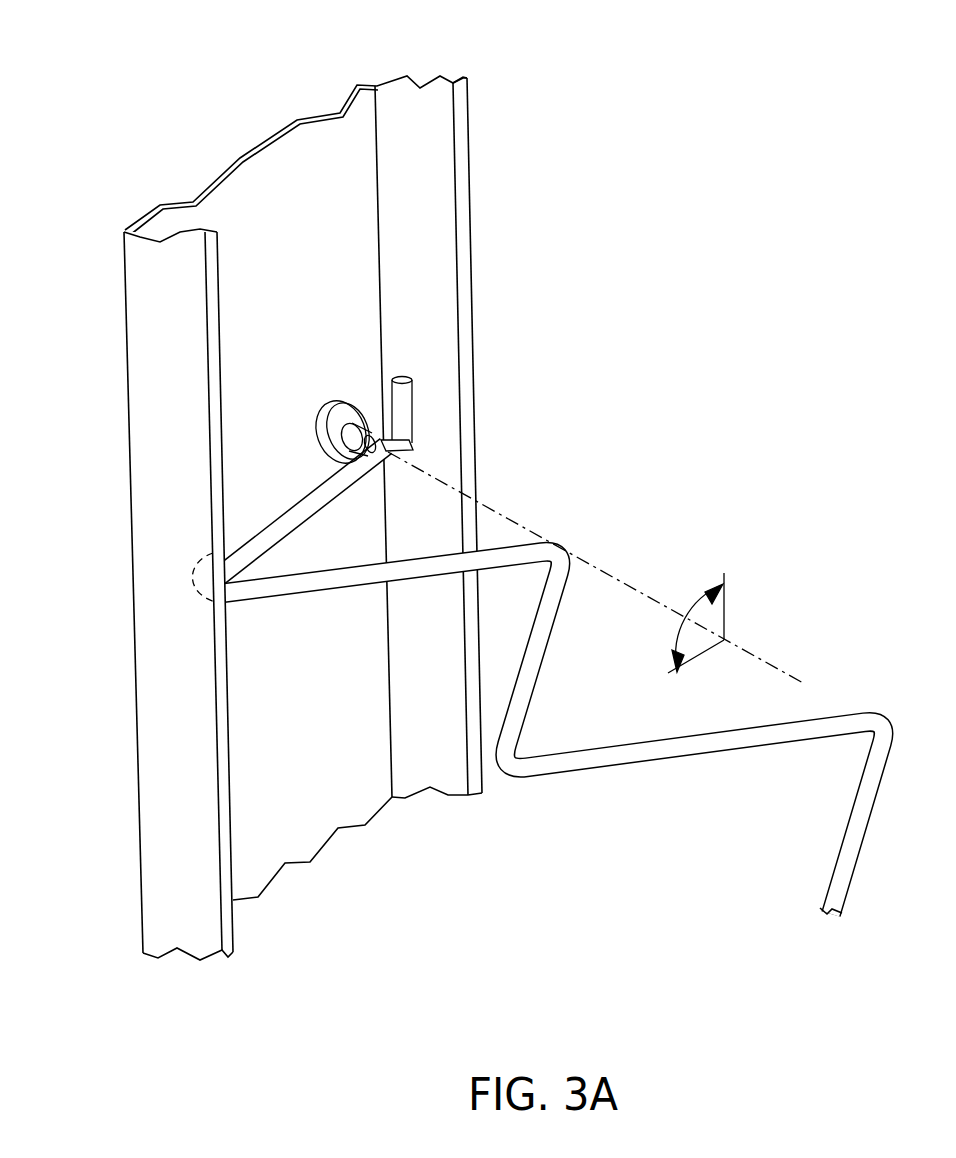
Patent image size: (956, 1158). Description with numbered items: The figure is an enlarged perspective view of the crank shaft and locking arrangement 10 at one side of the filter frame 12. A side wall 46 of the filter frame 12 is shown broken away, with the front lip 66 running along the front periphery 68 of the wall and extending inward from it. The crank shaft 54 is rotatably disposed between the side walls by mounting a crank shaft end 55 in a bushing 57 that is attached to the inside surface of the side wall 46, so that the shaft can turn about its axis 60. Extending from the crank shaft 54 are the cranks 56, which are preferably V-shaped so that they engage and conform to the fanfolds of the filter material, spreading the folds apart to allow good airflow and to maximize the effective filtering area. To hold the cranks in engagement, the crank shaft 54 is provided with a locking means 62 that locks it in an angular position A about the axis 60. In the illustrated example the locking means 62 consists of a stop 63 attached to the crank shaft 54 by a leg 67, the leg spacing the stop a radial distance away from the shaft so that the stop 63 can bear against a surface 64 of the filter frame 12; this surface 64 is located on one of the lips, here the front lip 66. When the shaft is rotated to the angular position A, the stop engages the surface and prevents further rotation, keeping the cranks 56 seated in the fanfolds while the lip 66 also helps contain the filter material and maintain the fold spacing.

The display hanger assembly 10 is at (684, 256).
The filter frame 12 is at (295, 120).
The side wall 46 is at (198, 198).
The crank shaft 54 is at (372, 470).
The crank shaft end 55 is at (363, 427).
The crank 56 is at (548, 770).
The bushing 57 is at (347, 437).
The axis 60 is at (647, 598).
The locking means 62 is at (445, 415).
The stop 63 is at (414, 375).
The surface 64 is at (432, 328).
The front lip 66 is at (420, 98).
The leg 67 is at (412, 452).
The front periphery 68 is at (125, 283).
The angular position A is at (682, 627).